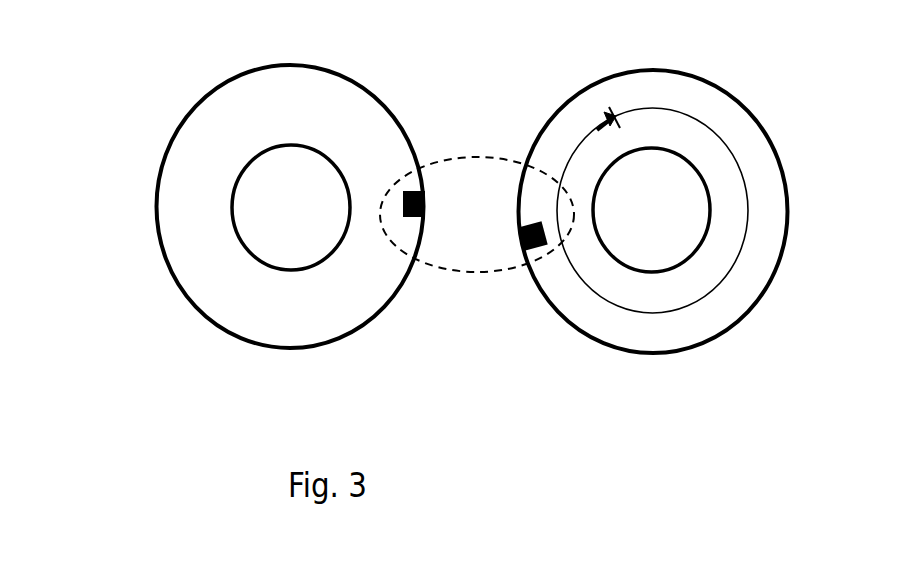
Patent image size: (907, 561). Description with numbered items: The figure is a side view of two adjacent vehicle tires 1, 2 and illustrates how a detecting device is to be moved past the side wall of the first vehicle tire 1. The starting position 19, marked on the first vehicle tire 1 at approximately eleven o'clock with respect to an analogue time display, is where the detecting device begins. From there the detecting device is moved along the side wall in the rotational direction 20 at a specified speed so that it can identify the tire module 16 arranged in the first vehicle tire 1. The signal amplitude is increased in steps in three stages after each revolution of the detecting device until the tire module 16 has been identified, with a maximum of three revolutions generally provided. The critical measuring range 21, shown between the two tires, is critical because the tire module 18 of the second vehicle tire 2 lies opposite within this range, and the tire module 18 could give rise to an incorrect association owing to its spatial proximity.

The first vehicle tire 1 is at (752, 110).
The second vehicle tire 2 is at (327, 68).
The tire module 16 is at (521, 238).
The tire module 18 is at (425, 200).
The starting position 19 is at (615, 124).
The rotational direction 20 is at (748, 240).
The critical measuring range 21 is at (435, 328).